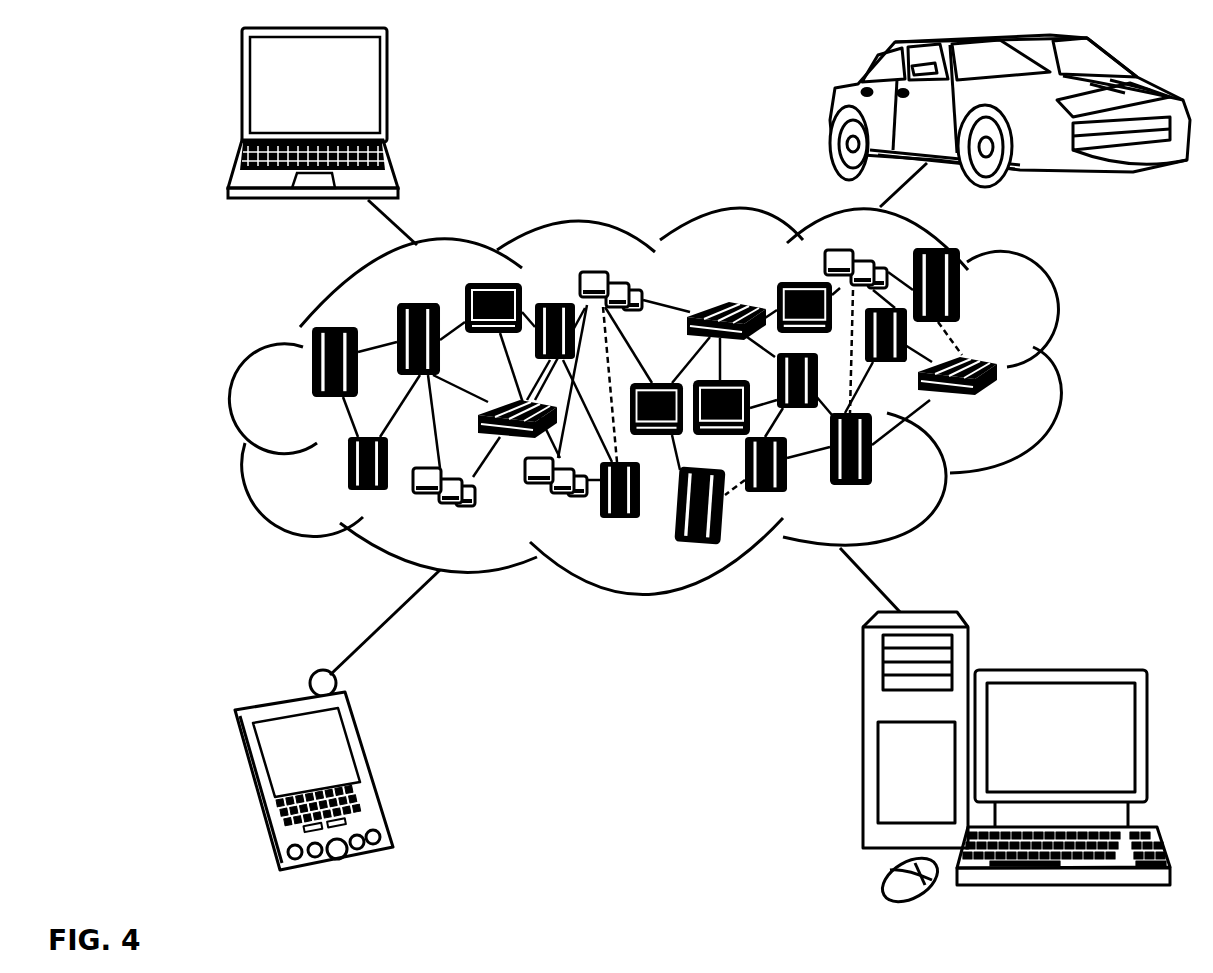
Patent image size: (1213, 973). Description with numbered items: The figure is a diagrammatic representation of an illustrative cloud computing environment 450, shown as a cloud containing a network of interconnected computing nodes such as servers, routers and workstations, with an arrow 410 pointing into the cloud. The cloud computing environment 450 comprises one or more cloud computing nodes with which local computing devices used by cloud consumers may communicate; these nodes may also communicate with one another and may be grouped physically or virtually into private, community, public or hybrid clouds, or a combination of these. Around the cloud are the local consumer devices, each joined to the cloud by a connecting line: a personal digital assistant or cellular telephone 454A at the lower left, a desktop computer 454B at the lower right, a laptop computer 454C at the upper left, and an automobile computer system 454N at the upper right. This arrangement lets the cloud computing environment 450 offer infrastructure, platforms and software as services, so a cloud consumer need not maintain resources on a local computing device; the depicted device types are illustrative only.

The laptop computer 454C is at (388, 92).
The automobile computer system 454N is at (833, 110).
The personal digital assistant (PDA) or cellular telephone 454A is at (371, 770).
The desktop computer 454B is at (1059, 670).
The cloud computing environment 450 is at (1062, 372).
The network system 410 is at (1010, 407).